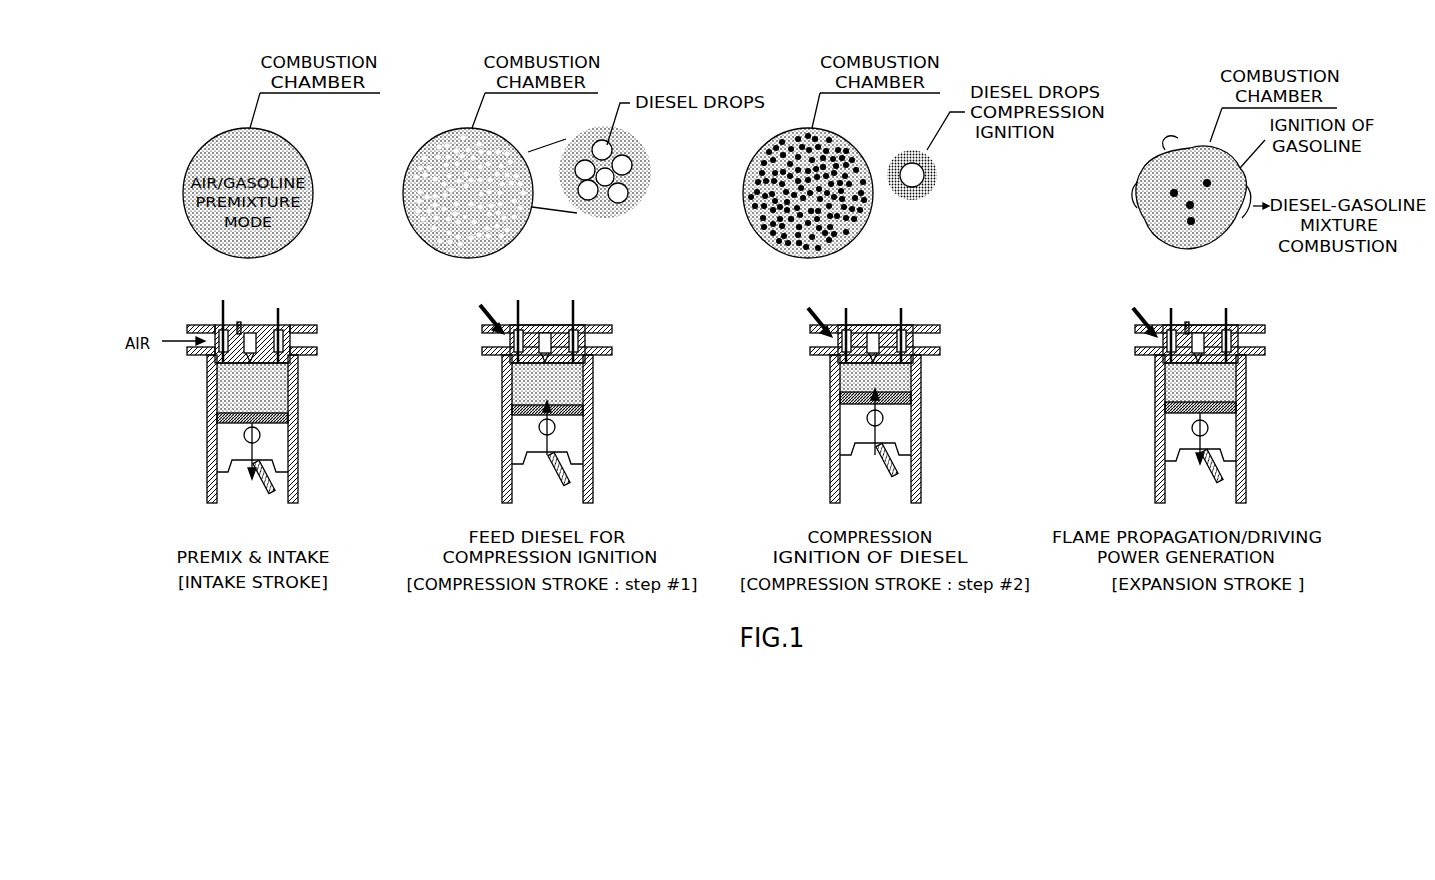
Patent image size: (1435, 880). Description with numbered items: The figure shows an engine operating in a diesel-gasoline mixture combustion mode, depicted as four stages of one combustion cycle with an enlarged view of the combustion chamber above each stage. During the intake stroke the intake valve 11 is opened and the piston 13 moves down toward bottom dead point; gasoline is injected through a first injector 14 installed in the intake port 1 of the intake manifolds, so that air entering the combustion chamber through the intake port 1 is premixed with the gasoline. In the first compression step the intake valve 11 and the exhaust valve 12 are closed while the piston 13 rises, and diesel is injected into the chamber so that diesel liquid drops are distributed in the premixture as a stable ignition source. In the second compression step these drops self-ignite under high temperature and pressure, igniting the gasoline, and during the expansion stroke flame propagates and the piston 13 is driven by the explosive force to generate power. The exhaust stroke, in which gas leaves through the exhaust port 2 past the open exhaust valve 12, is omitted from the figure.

The intake port 1 is at (205, 362).
The exhaust port 2 is at (292, 340).
The intake valve 11 is at (220, 330).
The exhaust valve 12 is at (277, 315).
The piston 13 is at (283, 443).
The first injector 14 is at (205, 329).